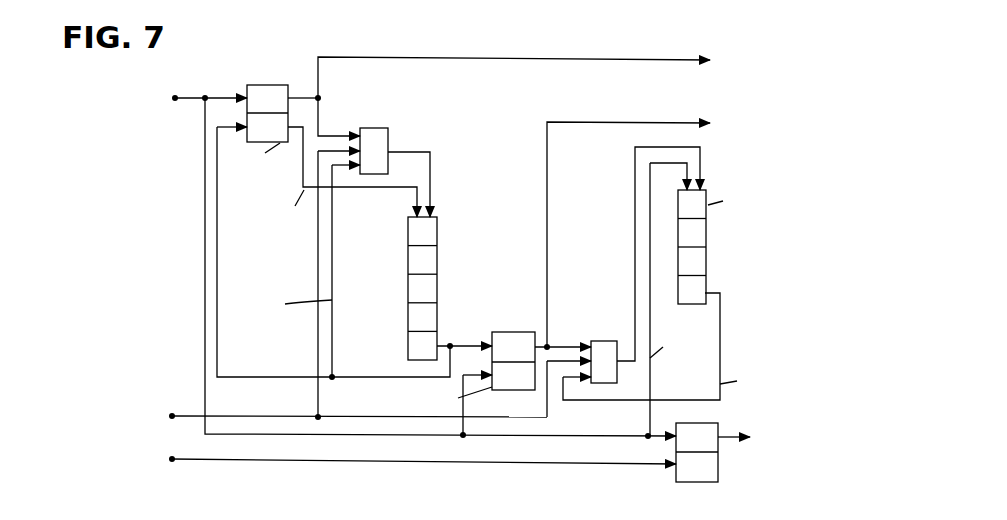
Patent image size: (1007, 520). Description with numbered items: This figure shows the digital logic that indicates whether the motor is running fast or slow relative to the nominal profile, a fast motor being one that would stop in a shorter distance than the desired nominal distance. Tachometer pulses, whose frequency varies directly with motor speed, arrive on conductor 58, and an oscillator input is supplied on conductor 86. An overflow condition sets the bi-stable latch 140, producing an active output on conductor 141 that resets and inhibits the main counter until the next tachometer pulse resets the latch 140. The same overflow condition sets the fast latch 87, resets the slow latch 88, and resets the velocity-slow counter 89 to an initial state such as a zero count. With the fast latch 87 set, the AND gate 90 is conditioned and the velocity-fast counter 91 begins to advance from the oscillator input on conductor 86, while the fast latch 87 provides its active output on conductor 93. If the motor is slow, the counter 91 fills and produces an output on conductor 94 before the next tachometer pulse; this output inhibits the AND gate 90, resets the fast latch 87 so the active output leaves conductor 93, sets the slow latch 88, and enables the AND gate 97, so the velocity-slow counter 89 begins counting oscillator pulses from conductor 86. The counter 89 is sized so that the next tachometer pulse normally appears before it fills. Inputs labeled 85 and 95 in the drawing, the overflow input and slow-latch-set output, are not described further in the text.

The conductor 58 is at (198, 461).
The overflow input line 85 is at (183, 97).
The conductor 86 is at (190, 415).
The fast latch 87 is at (258, 83).
The slow latch 88 is at (520, 392).
The velocity-slow counter 89 is at (708, 250).
The AND gate 90 is at (373, 128).
The velocity-fast counter 91 is at (408, 276).
The conductor 93 is at (612, 58).
The conductor 94 is at (441, 340).
The slow latch set output line 95 is at (612, 123).
The AND gate 97 is at (608, 341).
The bi-stable latch 140 is at (676, 479).
The conductor 141 is at (723, 440).